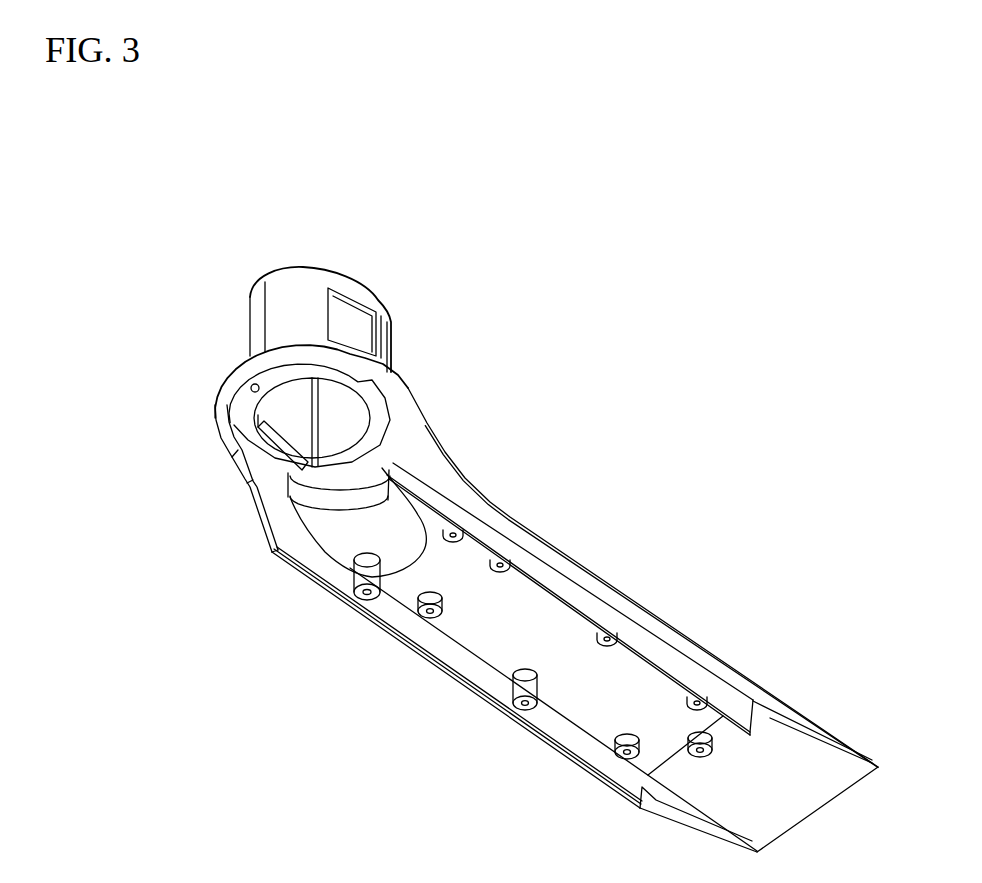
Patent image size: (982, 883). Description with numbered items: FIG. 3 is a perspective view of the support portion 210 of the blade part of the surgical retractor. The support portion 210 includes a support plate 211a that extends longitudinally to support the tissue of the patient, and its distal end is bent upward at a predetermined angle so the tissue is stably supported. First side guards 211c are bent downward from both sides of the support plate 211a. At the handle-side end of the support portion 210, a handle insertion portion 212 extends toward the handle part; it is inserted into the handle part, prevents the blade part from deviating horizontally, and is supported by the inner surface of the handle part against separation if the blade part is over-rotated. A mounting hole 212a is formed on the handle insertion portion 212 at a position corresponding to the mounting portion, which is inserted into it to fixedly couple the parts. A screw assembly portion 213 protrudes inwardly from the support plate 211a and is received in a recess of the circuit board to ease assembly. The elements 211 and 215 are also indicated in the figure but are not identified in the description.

The support portion 210 is at (206, 212).
The base plate 211 is at (220, 508).
The support plate 211a is at (496, 622).
The first side guards 211c is at (580, 750).
The handle insertion portion 212 is at (236, 292).
The mounting hole 212a is at (344, 320).
The screw assembly portion 213 is at (509, 712).
The ring flange 215 is at (418, 381).